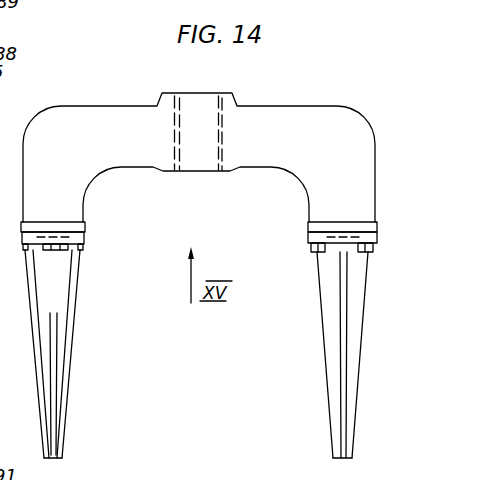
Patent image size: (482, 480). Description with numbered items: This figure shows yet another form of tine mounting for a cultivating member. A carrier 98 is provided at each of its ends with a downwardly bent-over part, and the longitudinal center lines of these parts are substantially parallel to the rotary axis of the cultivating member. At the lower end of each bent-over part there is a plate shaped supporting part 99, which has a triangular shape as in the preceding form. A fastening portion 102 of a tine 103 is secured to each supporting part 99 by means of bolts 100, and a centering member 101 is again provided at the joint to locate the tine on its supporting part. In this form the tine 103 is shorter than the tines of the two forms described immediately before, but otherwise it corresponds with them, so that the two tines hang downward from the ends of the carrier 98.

The carrier 98 is at (259, 112).
The plate shaped supporting part 99 is at (85, 224).
The bolt 100 is at (60, 250).
The centering member 101 is at (344, 236).
The fastening portion 102 is at (86, 238).
The tine 103 is at (63, 358).